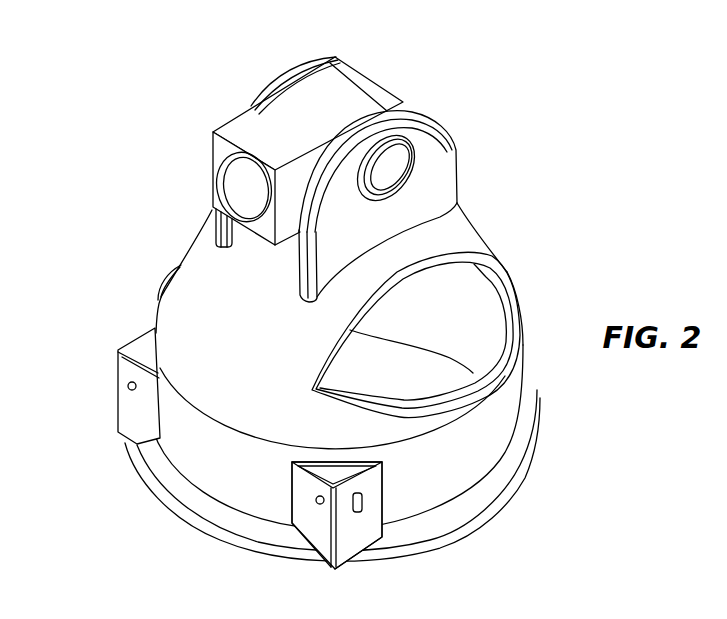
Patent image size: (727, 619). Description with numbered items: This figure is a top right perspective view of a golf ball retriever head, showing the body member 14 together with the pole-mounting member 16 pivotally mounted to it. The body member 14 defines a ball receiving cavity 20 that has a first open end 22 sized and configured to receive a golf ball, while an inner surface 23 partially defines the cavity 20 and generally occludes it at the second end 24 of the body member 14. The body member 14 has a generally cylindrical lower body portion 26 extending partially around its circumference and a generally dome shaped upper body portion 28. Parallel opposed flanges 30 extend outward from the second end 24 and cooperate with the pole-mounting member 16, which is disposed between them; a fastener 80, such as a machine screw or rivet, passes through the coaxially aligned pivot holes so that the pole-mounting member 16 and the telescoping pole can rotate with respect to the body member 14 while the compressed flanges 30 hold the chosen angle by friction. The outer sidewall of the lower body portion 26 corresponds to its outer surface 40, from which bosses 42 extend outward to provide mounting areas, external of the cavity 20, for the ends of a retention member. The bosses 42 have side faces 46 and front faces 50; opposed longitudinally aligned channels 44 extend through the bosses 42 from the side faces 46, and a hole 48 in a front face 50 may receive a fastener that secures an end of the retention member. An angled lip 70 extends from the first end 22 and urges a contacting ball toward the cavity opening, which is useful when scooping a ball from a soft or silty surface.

The body member 14 is at (480, 222).
The pole-mounting member 16 is at (260, 134).
The cavity 20 is at (450, 297).
The first open end 22 is at (503, 510).
The inner surface 23 is at (418, 297).
The second end 24 is at (257, 265).
The lower body portion 26 is at (505, 412).
The upper body portion 28 is at (213, 343).
The flanges 30 is at (297, 58).
The outer surface 40 is at (483, 450).
The bosses 42 is at (132, 440).
The channels 44 is at (256, 503).
The side faces 46 is at (365, 527).
The hole 48 is at (128, 382).
The front faces 50 is at (315, 527).
The angled lip 70 is at (157, 505).
The fastener 80 is at (389, 165).